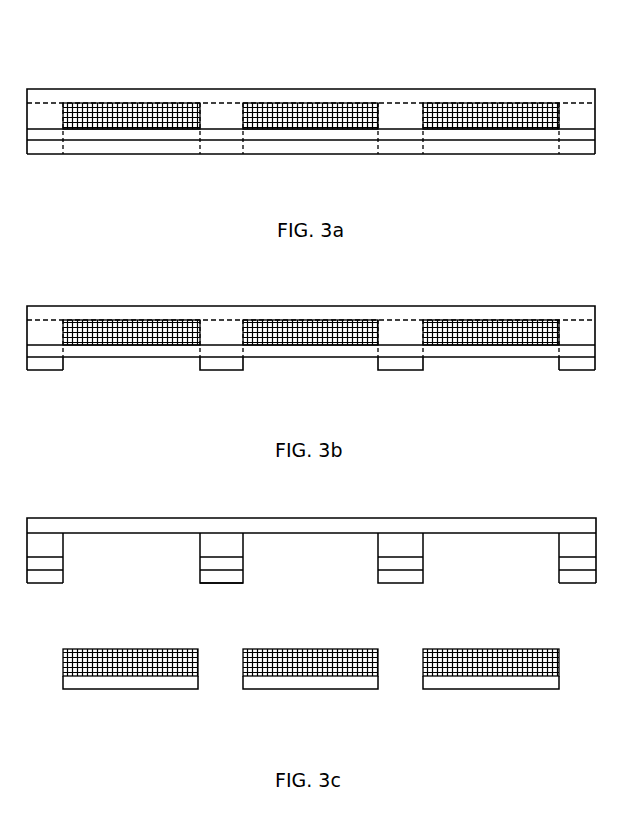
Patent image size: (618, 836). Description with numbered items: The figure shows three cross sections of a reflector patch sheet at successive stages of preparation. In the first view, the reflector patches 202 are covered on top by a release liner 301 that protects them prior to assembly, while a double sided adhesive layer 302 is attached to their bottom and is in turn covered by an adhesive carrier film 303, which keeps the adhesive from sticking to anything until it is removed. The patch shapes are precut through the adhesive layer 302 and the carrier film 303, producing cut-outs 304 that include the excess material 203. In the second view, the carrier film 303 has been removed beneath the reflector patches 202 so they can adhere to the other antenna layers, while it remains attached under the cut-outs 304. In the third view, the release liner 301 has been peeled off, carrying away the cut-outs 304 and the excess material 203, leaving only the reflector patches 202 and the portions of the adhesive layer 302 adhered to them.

In FIG. 3A, the reflector patches 202 is at (355, 104).
In FIG. 3B, the reflector patches 202 is at (343, 322).
In FIG. 3C, the reflector patches 202 is at (297, 648).
In FIG. 3A, the excess material 203 is at (232, 130).
In FIG. 3B, the excess material 203 is at (230, 347).
In FIG. 3C, the excess material 203 is at (243, 550).
In FIG. 3A, the release liner 301 is at (480, 89).
In FIG. 3B, the release liner 301 is at (520, 307).
In FIG. 3C, the release liner 301 is at (518, 519).
In FIG. 3A, the double sided adhesive layer 302 is at (88, 140).
In FIG. 3B, the double sided adhesive layer 302 is at (102, 357).
In FIG. 3C, the double sided adhesive layer 302 is at (122, 689).
In FIG. 3A, the adhesive carrier film 303 is at (167, 155).
In FIG. 3B, the adhesive carrier film 303 is at (207, 370).
In FIG. 3C, the adhesive carrier film 303 is at (220, 582).
In FIG. 3A, the cut-outs 304 is at (425, 135).
In FIG. 3B, the cut-outs 304 is at (423, 352).
In FIG. 3C, the cut-outs 304 is at (423, 562).